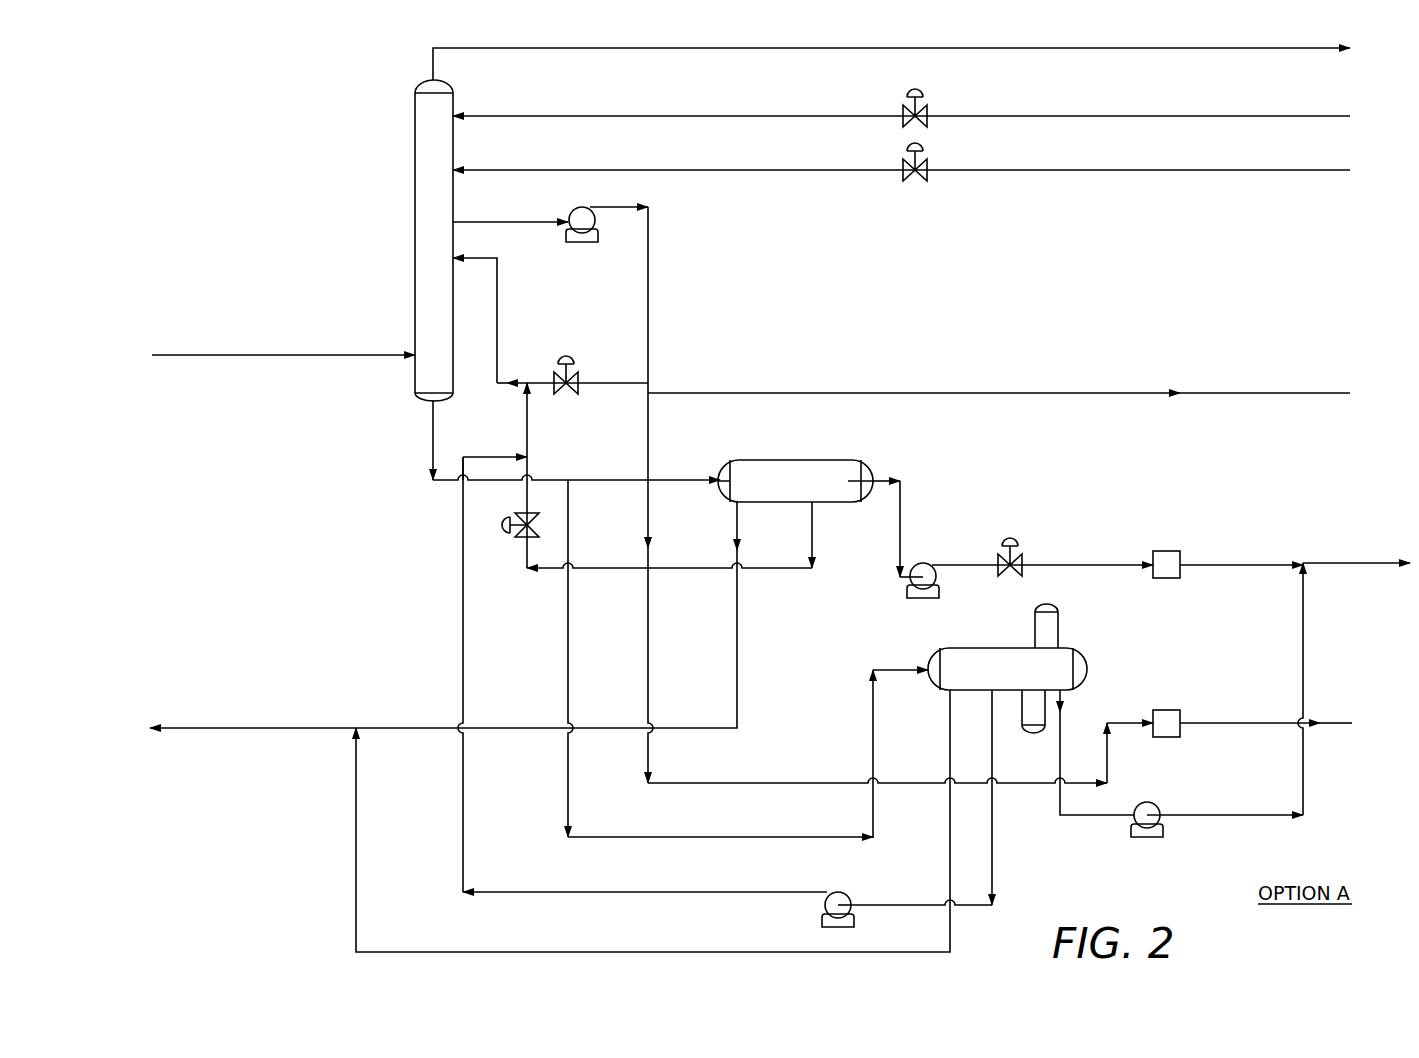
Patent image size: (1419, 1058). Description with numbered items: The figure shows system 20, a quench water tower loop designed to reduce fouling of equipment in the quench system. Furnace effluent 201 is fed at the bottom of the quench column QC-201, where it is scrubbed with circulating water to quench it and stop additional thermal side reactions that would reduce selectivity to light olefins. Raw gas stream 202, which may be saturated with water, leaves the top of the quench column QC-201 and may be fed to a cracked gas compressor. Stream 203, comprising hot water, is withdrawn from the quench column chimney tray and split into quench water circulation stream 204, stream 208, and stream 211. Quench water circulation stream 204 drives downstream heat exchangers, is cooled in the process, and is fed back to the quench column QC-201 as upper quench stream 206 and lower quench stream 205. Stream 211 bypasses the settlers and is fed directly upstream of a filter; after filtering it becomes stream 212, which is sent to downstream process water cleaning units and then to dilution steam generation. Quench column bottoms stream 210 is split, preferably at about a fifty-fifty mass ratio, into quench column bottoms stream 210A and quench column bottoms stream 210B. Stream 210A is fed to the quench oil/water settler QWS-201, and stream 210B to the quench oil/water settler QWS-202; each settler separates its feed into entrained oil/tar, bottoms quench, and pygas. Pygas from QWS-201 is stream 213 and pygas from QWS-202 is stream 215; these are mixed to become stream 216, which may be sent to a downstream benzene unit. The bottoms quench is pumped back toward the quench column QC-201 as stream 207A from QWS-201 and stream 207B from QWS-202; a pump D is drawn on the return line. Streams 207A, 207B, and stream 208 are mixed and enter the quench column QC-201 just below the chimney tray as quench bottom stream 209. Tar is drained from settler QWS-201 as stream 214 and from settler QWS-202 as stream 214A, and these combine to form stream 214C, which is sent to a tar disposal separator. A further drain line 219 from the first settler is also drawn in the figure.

The system 20 is at (262, 55).
The furnace effluent 201 is at (253, 355).
The raw gas stream 202 is at (616, 52).
The stream 203 is at (648, 228).
The quench water circulation stream 204 is at (1020, 393).
The lower quench stream 205 is at (1210, 170).
The upper quench stream 206 is at (1210, 116).
The stream 207A is at (609, 568).
The stream 207B is at (992, 855).
The stream 208 is at (611, 383).
The quench bottom stream 209 is at (497, 288).
The quench column bottoms stream 210 is at (433, 432).
The quench column bottoms stream 210A is at (677, 480).
The quench column bottoms stream 210B is at (568, 497).
The stream 211 is at (648, 525).
The stream 212 is at (1213, 723).
The stream 213 is at (1212, 565).
The stream 214 is at (737, 640).
The stream 214A is at (412, 952).
The stream 214C is at (265, 728).
The stream 215 is at (1160, 805).
The stream 216 is at (1325, 563).
The water draw stream 219 is at (737, 525).
The quench column QC-201 is at (415, 217).
The quench oil/water settler QWS-201 is at (848, 460).
The quench oil/water settler QWS-202 is at (1000, 648).
The pump D is at (851, 892).